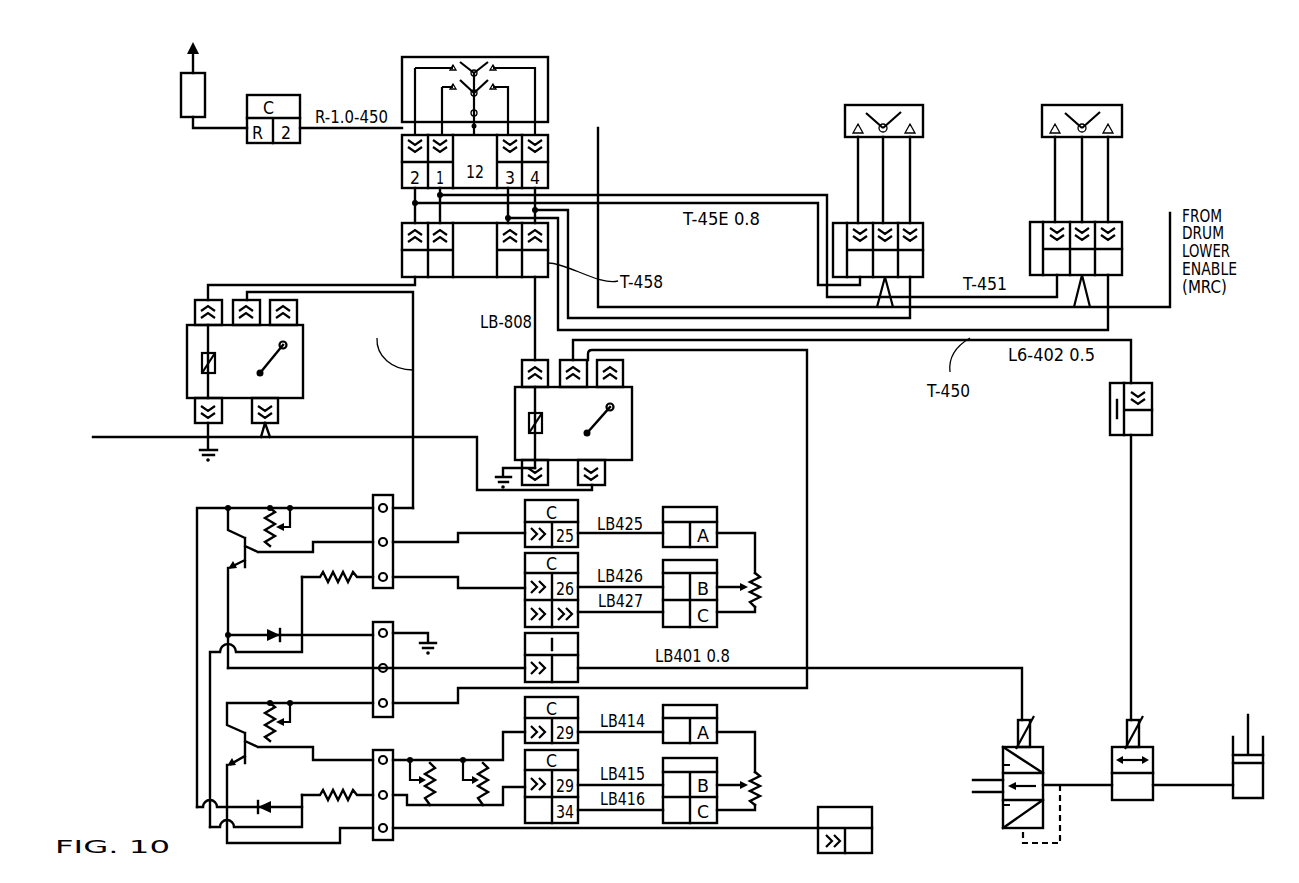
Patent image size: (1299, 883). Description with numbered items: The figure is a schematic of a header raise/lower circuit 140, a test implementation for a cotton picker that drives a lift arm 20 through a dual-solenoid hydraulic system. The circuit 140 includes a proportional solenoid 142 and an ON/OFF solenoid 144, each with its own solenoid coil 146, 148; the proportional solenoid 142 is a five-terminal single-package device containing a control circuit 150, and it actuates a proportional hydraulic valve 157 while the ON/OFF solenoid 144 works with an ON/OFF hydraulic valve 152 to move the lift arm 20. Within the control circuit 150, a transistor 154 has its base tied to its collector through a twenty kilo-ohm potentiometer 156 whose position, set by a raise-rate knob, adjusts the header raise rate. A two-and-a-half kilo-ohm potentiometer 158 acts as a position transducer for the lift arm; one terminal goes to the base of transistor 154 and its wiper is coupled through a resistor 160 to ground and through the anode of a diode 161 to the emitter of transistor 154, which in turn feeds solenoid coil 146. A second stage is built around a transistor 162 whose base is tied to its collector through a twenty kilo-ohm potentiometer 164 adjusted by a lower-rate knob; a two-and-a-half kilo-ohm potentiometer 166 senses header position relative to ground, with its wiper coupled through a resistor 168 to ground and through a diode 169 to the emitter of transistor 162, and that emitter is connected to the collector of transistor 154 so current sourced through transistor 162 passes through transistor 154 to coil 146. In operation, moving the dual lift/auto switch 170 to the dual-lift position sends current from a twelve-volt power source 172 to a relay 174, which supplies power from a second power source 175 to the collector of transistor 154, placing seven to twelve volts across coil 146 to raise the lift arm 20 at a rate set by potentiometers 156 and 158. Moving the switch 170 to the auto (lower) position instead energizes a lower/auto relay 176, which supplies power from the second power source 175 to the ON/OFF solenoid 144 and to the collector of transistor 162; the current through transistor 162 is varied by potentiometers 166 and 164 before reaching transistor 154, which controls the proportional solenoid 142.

The lift arm 20 is at (1250, 737).
The header raise/lower circuit 140 is at (990, 49).
The proportional solenoid 142 is at (1066, 642).
The ON/OFF solenoid 144 is at (1163, 638).
The solenoid coil 146 is at (1030, 740).
The solenoid coil 148 is at (1139, 730).
The control circuit 150 is at (245, 492).
The ON/OFF hydraulic valve 152 is at (1153, 752).
The transistor 154 is at (226, 535).
The potentiometer 156 is at (260, 503).
The proportional hydraulic valve 157 is at (1043, 752).
The potentiometer 158 is at (760, 552).
The resistor 160 is at (330, 571).
The diode 161 is at (277, 630).
The transistor 162 is at (230, 735).
The potentiometer 164 is at (263, 712).
The potentiometer 166 is at (758, 750).
The resistor 168 is at (341, 803).
The diode 169 is at (263, 805).
The dual lift/auto switch 170 is at (548, 87).
The power source 172 is at (190, 58).
The relay 174 is at (303, 360).
The second power source 175 is at (113, 437).
The lower/auto relay 176 is at (513, 426).